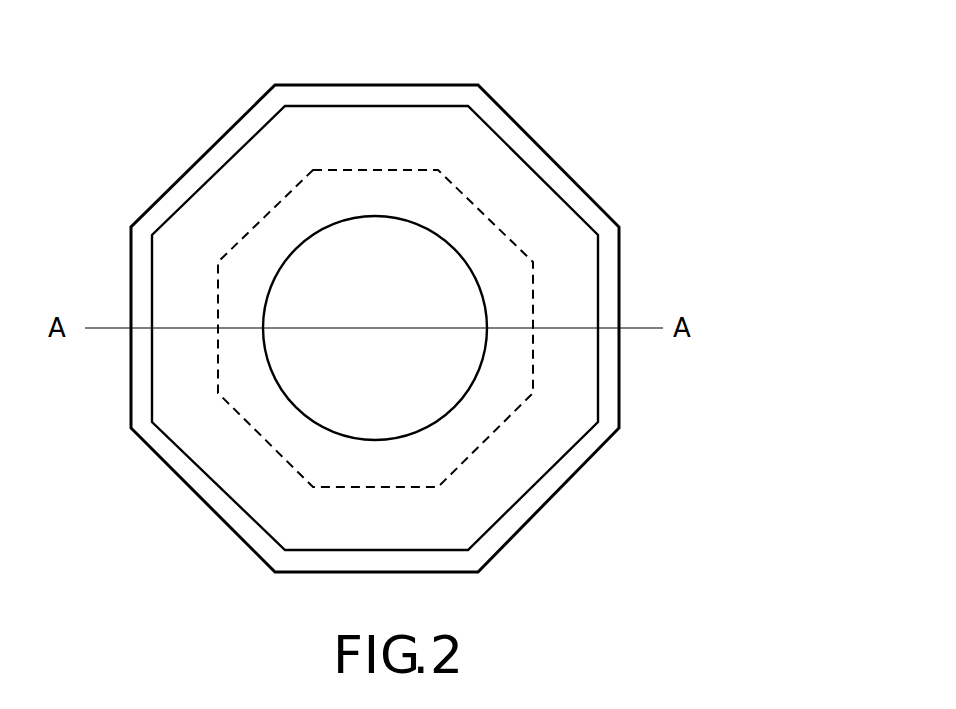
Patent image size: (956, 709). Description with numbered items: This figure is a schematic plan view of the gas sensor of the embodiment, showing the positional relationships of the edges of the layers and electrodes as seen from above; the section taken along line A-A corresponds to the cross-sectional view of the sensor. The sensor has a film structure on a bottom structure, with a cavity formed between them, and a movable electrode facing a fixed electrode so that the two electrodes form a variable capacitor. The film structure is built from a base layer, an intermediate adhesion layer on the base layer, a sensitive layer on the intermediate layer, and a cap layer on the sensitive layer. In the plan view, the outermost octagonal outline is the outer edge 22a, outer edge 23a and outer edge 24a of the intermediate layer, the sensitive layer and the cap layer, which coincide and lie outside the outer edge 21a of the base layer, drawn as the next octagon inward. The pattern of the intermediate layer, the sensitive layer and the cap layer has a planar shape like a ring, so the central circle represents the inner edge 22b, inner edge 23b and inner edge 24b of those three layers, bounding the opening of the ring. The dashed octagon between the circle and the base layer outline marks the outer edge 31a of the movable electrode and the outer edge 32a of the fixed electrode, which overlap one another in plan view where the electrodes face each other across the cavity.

The outer edge of the base layer 21a is at (518, 153).
The outer edge of the intermediate layer 22a is at (462, 328).
The outer edge of the sensitive layer 23a is at (462, 328).
The outer edge of the cap layer 24a is at (619, 381).
The inner edge of the intermediate layer 22b is at (483, 378).
The inner edge of the sensitive layer 23b is at (483, 378).
The inner edge of the cap layer 24b is at (462, 403).
The outer edge of the movable electrode 31a is at (458, 319).
The outer edge of the fixed electrode 32a is at (508, 229).